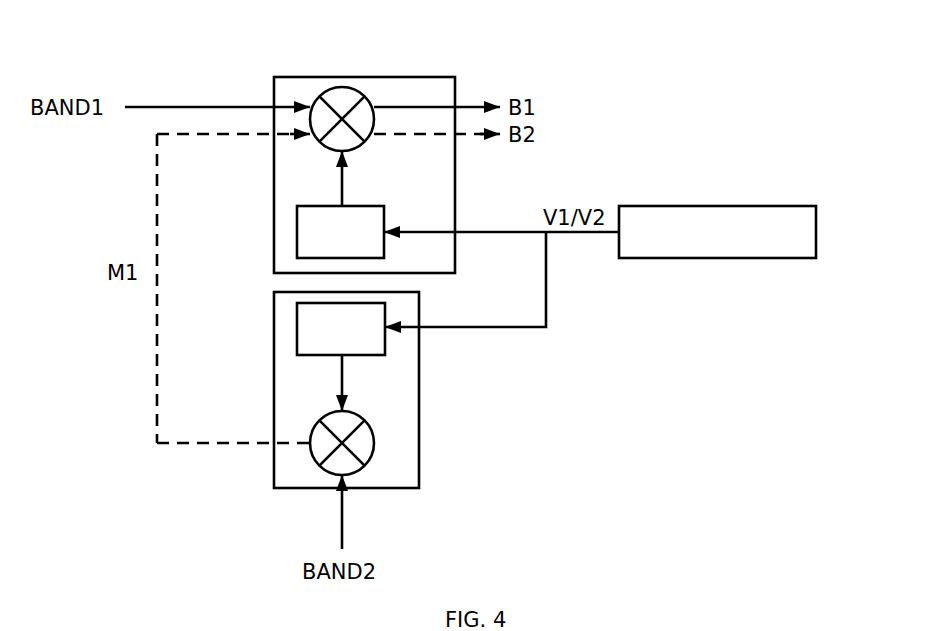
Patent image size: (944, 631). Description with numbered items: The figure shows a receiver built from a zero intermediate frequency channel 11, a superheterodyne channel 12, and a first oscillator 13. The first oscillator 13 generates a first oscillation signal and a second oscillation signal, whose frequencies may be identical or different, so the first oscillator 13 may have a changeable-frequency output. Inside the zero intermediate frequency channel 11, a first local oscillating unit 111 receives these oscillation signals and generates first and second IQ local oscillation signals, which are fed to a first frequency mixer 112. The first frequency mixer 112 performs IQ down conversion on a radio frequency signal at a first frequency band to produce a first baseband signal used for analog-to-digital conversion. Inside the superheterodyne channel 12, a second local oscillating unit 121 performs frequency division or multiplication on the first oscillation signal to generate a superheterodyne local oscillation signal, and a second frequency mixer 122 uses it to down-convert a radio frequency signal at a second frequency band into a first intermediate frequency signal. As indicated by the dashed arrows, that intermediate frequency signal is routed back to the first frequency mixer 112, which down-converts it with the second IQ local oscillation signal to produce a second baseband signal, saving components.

The zero intermediate frequency channel 11 is at (455, 176).
The first local oscillating unit 111 is at (297, 235).
The first frequency mixer 112 is at (360, 90).
The superheterodyne channel 12 is at (419, 389).
The second local oscillating unit 121 is at (297, 333).
The second frequency mixer 122 is at (362, 468).
The first oscillator 13 is at (816, 232).